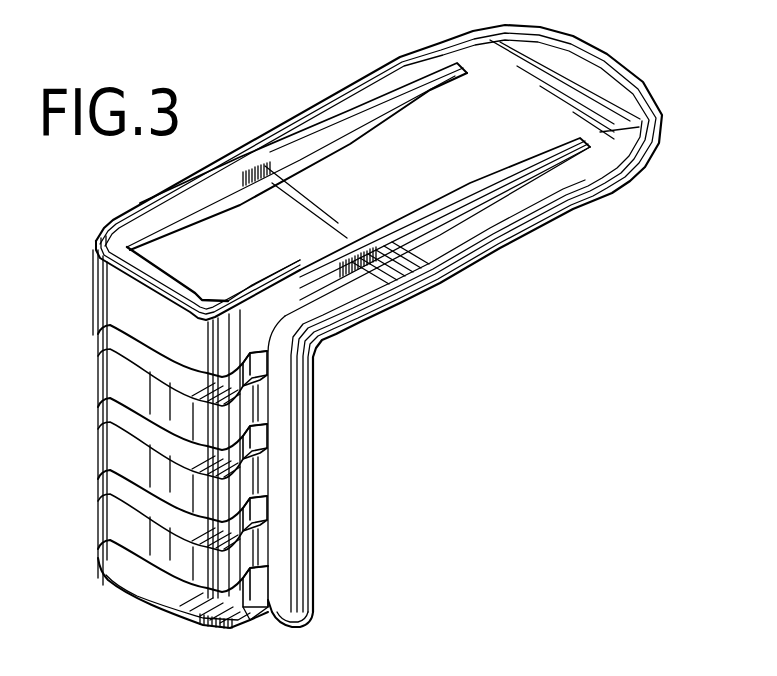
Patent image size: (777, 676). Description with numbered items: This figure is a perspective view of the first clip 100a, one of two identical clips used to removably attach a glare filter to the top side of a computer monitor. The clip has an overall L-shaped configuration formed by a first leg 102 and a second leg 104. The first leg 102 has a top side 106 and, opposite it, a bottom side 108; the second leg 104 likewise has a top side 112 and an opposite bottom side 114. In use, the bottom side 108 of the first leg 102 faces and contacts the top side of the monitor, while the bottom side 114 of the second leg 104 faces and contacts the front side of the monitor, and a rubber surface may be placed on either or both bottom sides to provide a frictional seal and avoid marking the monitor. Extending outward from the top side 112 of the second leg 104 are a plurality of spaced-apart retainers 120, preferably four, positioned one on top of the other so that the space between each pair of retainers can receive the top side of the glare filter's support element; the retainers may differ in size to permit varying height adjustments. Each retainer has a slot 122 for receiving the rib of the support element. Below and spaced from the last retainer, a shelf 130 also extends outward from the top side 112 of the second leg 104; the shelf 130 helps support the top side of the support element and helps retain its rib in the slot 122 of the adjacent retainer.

The first clip 100a is at (397, 328).
The first leg 102 is at (654, 145).
The second leg 104 is at (310, 607).
The top side 106 is at (605, 93).
The bottom side 108 is at (301, 113).
The top side 112 is at (277, 587).
The bottom side 114 is at (313, 443).
The retainers 120 is at (110, 513).
The slot 122 is at (267, 499).
The shelf 130 is at (187, 617).